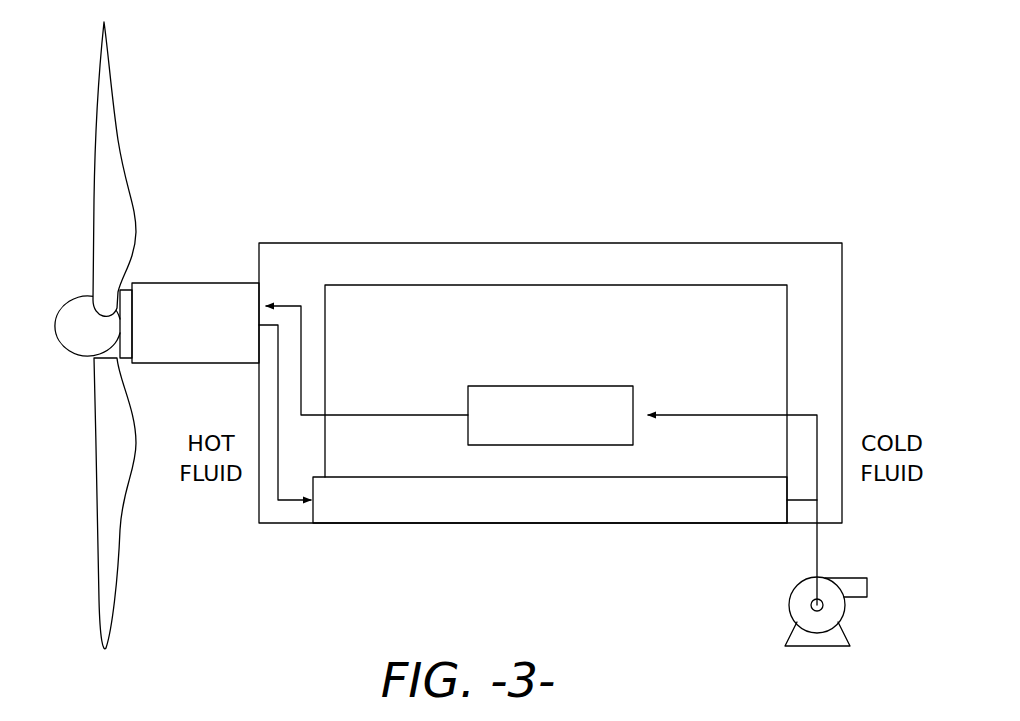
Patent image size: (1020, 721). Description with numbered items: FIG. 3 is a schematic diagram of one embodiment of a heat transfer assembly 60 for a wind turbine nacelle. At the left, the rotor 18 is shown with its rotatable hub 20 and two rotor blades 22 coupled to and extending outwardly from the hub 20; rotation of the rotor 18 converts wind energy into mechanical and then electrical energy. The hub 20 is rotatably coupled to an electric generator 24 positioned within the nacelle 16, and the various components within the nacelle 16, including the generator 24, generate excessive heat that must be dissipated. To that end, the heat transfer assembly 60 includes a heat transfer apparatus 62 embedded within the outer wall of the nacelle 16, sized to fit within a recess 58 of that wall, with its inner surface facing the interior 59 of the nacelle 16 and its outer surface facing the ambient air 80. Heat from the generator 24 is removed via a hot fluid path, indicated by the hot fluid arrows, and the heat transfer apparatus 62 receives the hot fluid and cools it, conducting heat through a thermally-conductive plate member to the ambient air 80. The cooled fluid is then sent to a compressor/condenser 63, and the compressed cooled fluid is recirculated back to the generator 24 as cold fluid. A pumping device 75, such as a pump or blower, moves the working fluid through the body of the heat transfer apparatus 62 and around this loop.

The nacelle 16 is at (660, 242).
The rotor 18 is at (69, 335).
The rotatable hub 20 is at (78, 332).
The rotor blade 22 is at (92, 188).
The electric generator 24 is at (168, 283).
The recess 58 is at (312, 507).
The interior 59 is at (615, 353).
The heat transfer assembly 60 is at (805, 388).
The heat transfer apparatus 62 is at (447, 526).
The compressor/condenser 63 is at (621, 447).
The pumping device 75 is at (785, 604).
The ambient air 80 is at (527, 579).